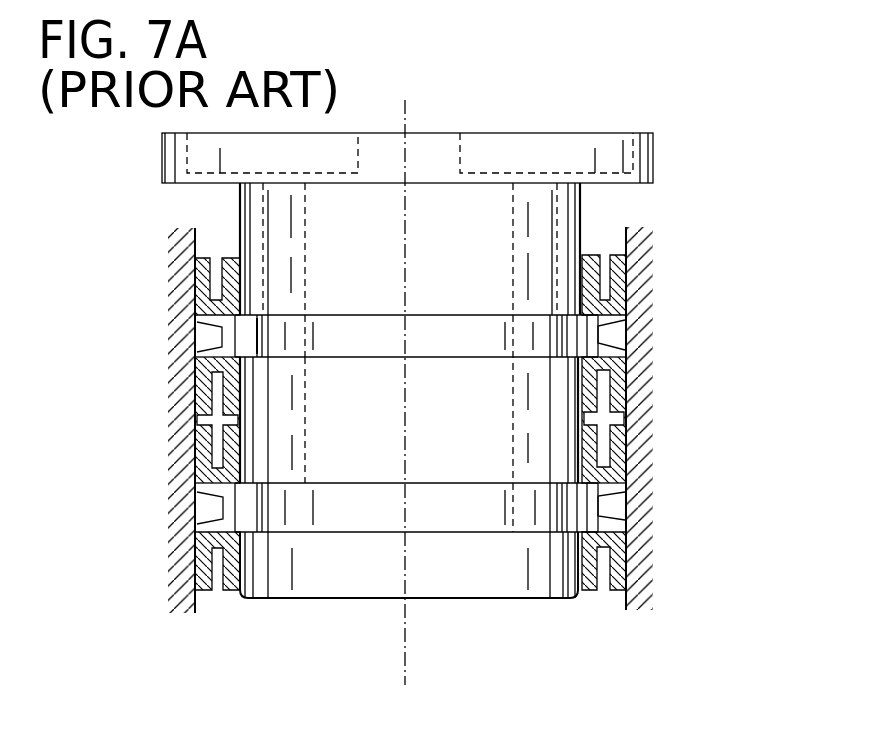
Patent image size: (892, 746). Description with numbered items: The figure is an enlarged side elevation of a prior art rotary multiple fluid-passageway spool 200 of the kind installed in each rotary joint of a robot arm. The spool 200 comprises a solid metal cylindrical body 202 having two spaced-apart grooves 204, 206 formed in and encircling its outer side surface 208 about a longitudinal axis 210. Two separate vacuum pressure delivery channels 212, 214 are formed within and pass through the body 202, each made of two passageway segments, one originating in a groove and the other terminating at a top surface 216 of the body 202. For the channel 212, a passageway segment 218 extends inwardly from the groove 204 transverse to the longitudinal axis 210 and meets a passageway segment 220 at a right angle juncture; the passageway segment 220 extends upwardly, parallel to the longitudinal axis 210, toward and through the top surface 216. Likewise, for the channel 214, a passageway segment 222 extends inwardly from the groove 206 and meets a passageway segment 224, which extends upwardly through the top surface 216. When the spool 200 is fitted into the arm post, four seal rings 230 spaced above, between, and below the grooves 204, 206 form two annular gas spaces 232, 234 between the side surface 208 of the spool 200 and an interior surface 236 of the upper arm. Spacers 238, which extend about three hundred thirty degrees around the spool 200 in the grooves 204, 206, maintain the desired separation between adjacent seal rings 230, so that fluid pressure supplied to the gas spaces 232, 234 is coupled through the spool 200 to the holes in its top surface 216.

The rotary multiple fluid-passageway spool 200 is at (153, 606).
The cylindrical body 202 is at (576, 598).
The groove 204 is at (548, 335).
The groove 206 is at (477, 520).
The outer side surface 208 is at (582, 217).
The longitudinal axis 210 is at (407, 675).
The vacuum pressure delivery channel 212 is at (312, 253).
The vacuum pressure delivery channel 214 is at (503, 408).
The top surface 216 is at (428, 133).
The passageway segment 218 is at (262, 342).
The passageway segment 220 is at (280, 302).
The passageway segment 222 is at (267, 510).
The passageway segment 224 is at (524, 455).
The seal rings 230 is at (617, 272).
The annular gas space 232 is at (640, 339).
The annular gas space 234 is at (638, 507).
The interior surface 236 is at (182, 257).
The spacers 238 is at (205, 325).